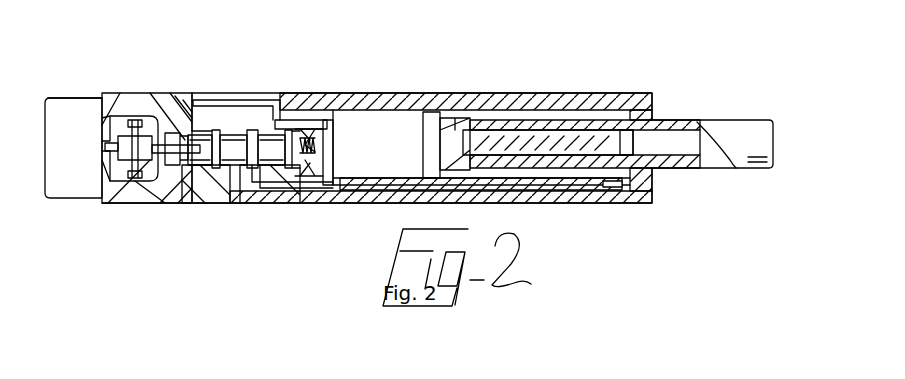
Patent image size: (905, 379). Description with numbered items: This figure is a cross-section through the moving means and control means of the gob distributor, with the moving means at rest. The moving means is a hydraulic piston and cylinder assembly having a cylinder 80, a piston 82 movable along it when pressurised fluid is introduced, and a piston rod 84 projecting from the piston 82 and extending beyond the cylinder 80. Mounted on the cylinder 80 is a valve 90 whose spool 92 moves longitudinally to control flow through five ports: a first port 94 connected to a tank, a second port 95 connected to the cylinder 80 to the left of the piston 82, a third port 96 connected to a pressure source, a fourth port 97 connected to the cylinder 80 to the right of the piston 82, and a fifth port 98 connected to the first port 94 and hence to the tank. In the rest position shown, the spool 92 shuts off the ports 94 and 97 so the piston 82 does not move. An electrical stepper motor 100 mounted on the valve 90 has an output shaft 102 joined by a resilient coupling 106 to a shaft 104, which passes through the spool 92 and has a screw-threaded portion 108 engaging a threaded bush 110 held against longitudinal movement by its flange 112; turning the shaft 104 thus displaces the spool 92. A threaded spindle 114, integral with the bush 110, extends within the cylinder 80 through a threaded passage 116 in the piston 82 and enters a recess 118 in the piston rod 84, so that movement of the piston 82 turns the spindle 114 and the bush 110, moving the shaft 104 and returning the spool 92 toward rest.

The cylinder 80 is at (400, 95).
The piston 82 is at (444, 112).
The piston rod 84 is at (735, 130).
The valve 90 is at (247, 95).
The spool 92 is at (212, 200).
The first port 94 is at (185, 98).
The second port 95 is at (218, 98).
The third port 96 is at (240, 200).
The fourth port 97 is at (268, 205).
The fifth port 98 is at (293, 95).
The electrical stepper motor 100 is at (72, 187).
The output shaft 102 is at (85, 98).
The shaft 104 is at (158, 200).
The resilient coupling 106 is at (131, 100).
The screw-threaded portion 108 is at (303, 172).
The threaded bush 110 is at (318, 96).
The flange 112 is at (330, 185).
The threaded spindle 114 is at (576, 140).
The threaded passage 116 is at (463, 152).
The recess 118 is at (694, 158).